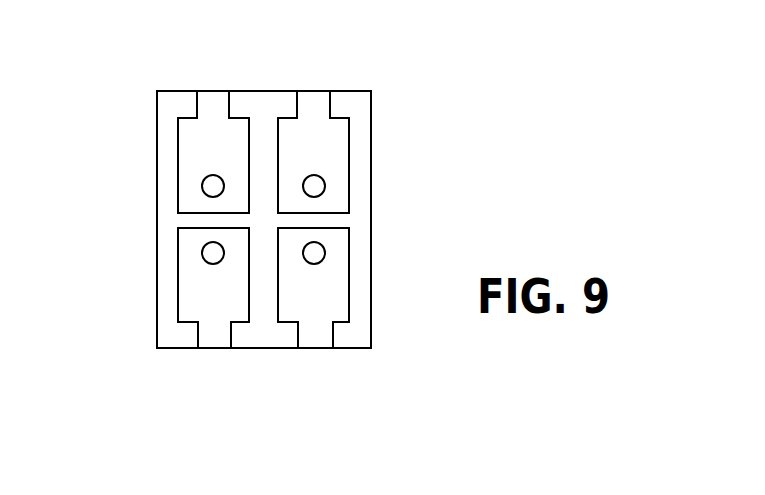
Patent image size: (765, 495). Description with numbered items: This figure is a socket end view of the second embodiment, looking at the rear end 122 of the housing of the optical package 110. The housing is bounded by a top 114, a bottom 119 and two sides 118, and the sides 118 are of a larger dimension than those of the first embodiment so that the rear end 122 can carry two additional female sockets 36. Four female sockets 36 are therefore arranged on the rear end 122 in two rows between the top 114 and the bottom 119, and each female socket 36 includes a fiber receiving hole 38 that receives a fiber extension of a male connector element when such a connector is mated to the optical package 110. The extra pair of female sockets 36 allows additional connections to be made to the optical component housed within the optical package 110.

The optical package 110 is at (447, 70).
The top 114 is at (262, 90).
The sides 118 is at (157, 112).
The bottom 119 is at (265, 348).
The rear end 122 is at (357, 100).
The female socket 36 is at (178, 135).
The fiber receiving hole 38 is at (203, 181).